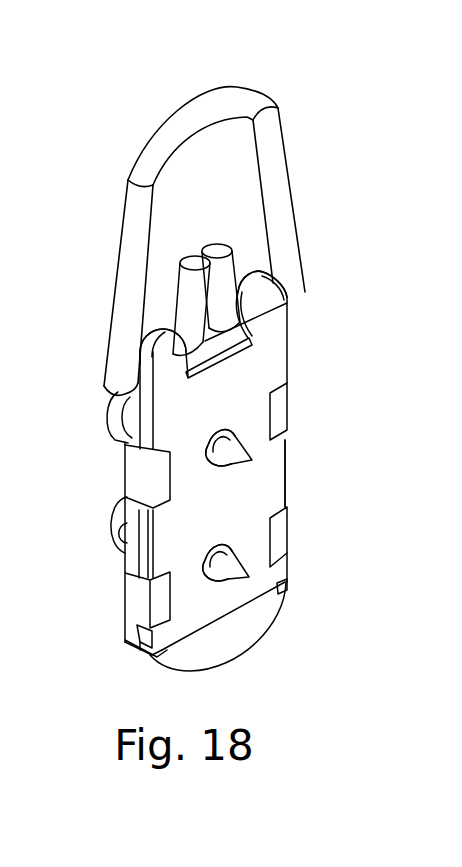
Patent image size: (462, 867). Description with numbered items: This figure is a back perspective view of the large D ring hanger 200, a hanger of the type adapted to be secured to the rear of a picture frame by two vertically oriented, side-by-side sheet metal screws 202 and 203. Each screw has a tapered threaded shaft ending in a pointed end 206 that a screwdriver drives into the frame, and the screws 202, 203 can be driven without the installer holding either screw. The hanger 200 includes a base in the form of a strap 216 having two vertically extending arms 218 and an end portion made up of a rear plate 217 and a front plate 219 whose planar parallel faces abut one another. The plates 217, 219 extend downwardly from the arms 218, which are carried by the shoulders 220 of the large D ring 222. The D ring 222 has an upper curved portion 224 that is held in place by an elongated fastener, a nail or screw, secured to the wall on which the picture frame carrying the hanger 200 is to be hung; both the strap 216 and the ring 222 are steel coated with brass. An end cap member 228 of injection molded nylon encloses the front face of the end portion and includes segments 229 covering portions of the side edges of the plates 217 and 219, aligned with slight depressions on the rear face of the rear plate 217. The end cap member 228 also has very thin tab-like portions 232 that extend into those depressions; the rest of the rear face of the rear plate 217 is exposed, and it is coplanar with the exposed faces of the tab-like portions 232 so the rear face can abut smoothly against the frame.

The large D ring hanger 200 is at (314, 407).
The sheet metal screw 202 is at (254, 459).
The sheet metal screw 203 is at (251, 557).
The pointed end 206 is at (233, 466).
The strap 216 is at (278, 353).
The rear plate 217 is at (173, 537).
The arms 218 is at (162, 342).
The front plate 219 is at (138, 580).
The shoulders 220 is at (140, 378).
The large D ring 222 is at (279, 167).
The upper curved portion 224 is at (215, 97).
The end cap member 228 is at (127, 496).
The segments 229 is at (138, 463).
The thin tab-like portions 232 is at (288, 388).